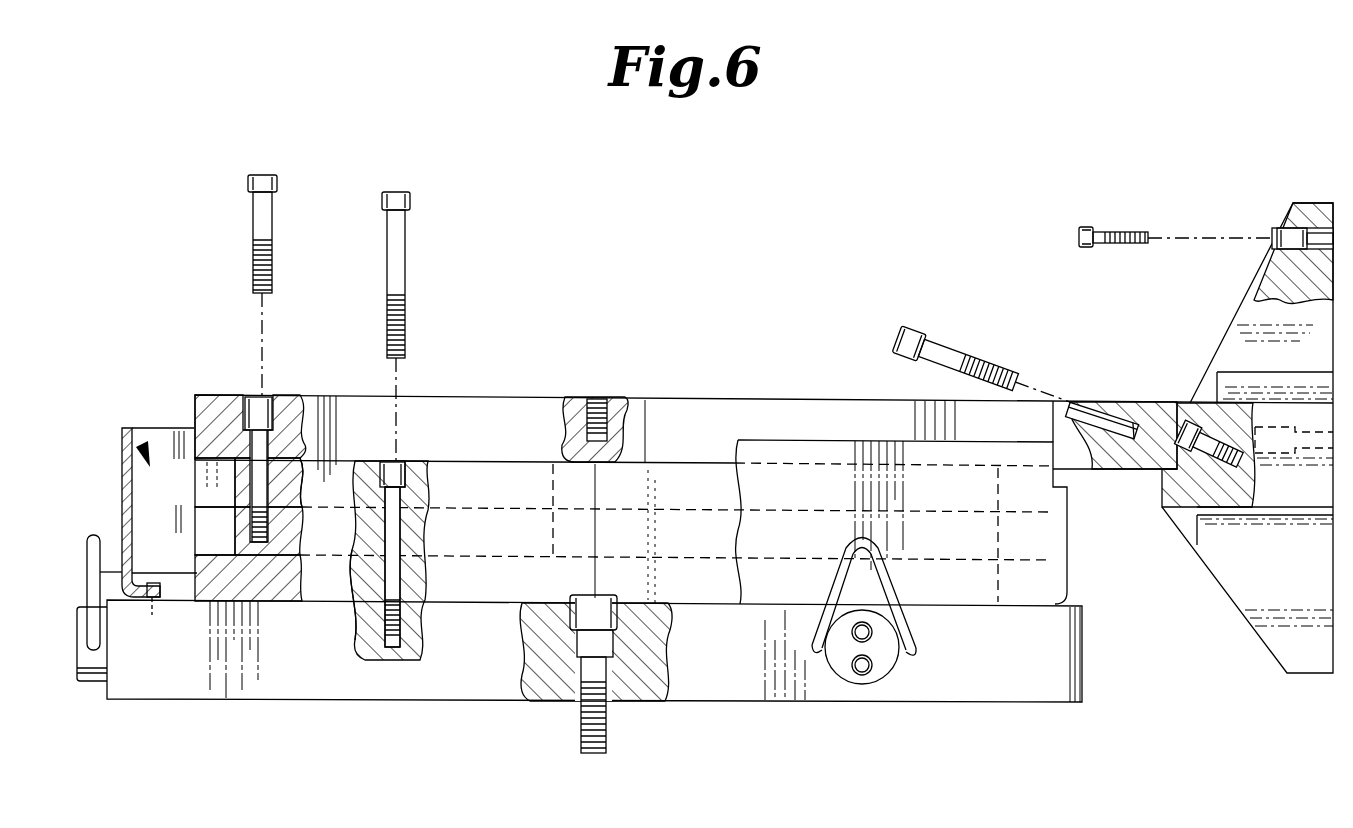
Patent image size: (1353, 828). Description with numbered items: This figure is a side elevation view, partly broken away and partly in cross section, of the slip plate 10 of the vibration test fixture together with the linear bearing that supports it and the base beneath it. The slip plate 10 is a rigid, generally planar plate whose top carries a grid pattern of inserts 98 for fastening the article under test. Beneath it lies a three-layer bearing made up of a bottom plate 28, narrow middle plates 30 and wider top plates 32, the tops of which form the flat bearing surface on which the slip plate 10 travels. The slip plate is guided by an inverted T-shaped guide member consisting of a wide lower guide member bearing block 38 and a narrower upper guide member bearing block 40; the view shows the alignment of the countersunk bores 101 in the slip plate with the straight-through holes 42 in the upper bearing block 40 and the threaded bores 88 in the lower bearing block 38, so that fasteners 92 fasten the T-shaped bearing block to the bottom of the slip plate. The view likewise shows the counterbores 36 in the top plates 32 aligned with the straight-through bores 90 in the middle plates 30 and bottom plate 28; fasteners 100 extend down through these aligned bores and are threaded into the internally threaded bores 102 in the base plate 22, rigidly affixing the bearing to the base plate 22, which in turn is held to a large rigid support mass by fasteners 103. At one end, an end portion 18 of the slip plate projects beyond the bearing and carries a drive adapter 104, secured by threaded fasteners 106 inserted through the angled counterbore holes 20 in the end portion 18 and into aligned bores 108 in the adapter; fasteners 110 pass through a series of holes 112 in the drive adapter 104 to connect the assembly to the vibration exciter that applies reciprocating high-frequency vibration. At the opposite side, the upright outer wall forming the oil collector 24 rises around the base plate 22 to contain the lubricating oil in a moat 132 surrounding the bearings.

The slip plate 10 is at (218, 400).
The end portion 18 is at (1110, 445).
The holes 20 is at (1110, 413).
The base plate 22 is at (1070, 655).
The outer wall 24 is at (123, 428).
The bottom plate 28 is at (100, 572).
The middle plates 30 is at (428, 540).
The top plates 32 is at (428, 497).
The counterbores 36 is at (402, 468).
The lower guide member bearing block 38 is at (233, 529).
The upper guide member bearing block 40 is at (240, 473).
The holes 42 is at (305, 458).
The bores 88 is at (233, 542).
The bores 90 is at (363, 603).
The fasteners 92 is at (270, 212).
The inserts 98 is at (620, 398).
The fasteners 100 is at (403, 232).
The countersunk bores 101 is at (280, 403).
The internally threaded bores 102 is at (430, 626).
The fasteners 103 is at (580, 732).
The drive adapter 104 is at (1240, 325).
The threaded fasteners 106 is at (935, 345).
The bores 108 is at (1225, 468).
The fasteners 110 is at (1127, 230).
The holes 112 is at (1277, 232).
The moat 132 is at (124, 460).